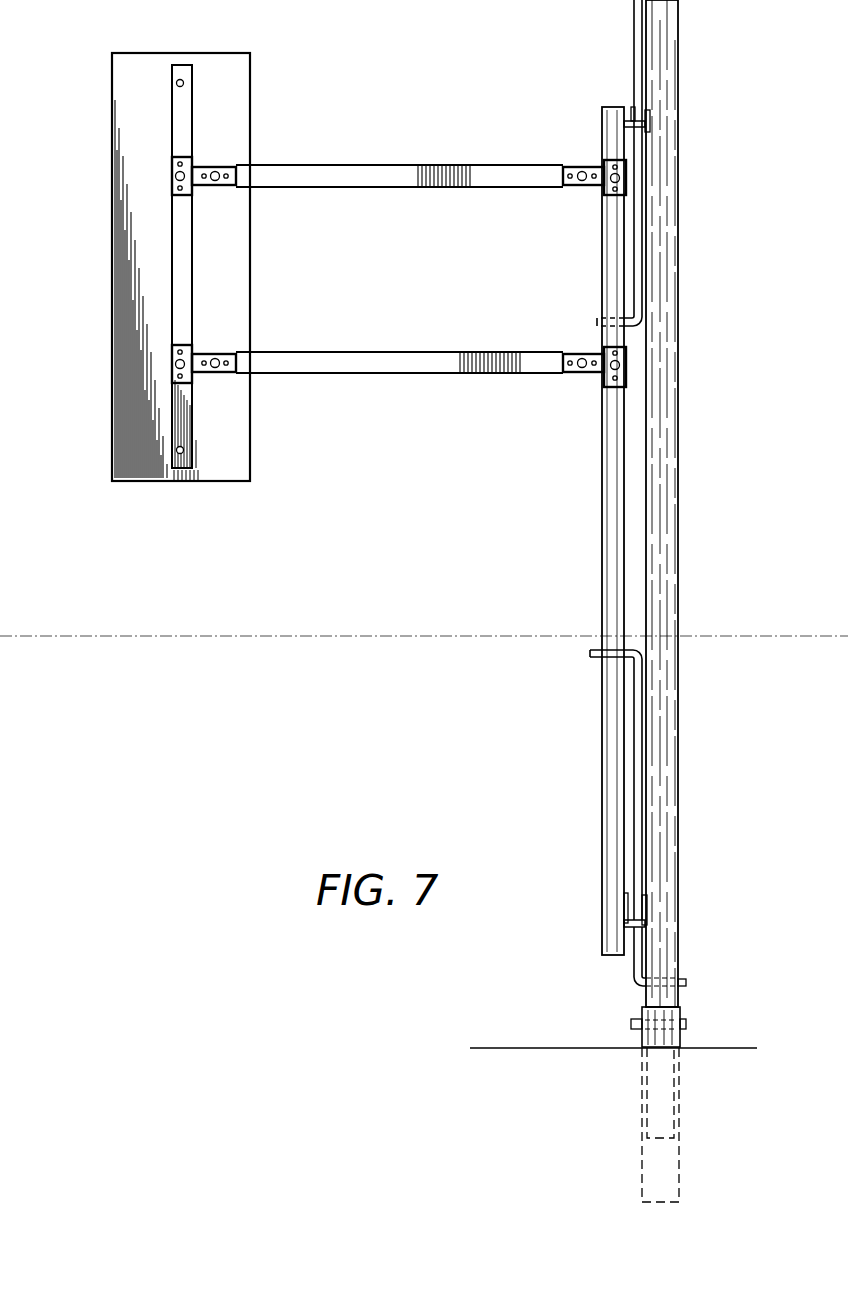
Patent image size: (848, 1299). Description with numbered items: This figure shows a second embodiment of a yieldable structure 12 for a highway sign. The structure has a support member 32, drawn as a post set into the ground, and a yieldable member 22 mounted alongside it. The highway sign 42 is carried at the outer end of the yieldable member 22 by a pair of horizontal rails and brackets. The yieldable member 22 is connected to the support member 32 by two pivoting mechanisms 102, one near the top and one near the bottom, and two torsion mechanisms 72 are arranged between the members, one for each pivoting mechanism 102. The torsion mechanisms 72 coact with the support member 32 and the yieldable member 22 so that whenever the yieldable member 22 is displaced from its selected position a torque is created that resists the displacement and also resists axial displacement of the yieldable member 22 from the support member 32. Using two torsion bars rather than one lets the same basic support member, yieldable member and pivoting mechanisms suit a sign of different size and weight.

The yieldable structure 12 is at (527, 519).
The yieldable member 22 is at (600, 438).
The support member 32 is at (684, 670).
The highway sign 42 is at (104, 264).
The torsion mechanism 72 is at (644, 216).
The pivoting mechanism 102 is at (650, 138).